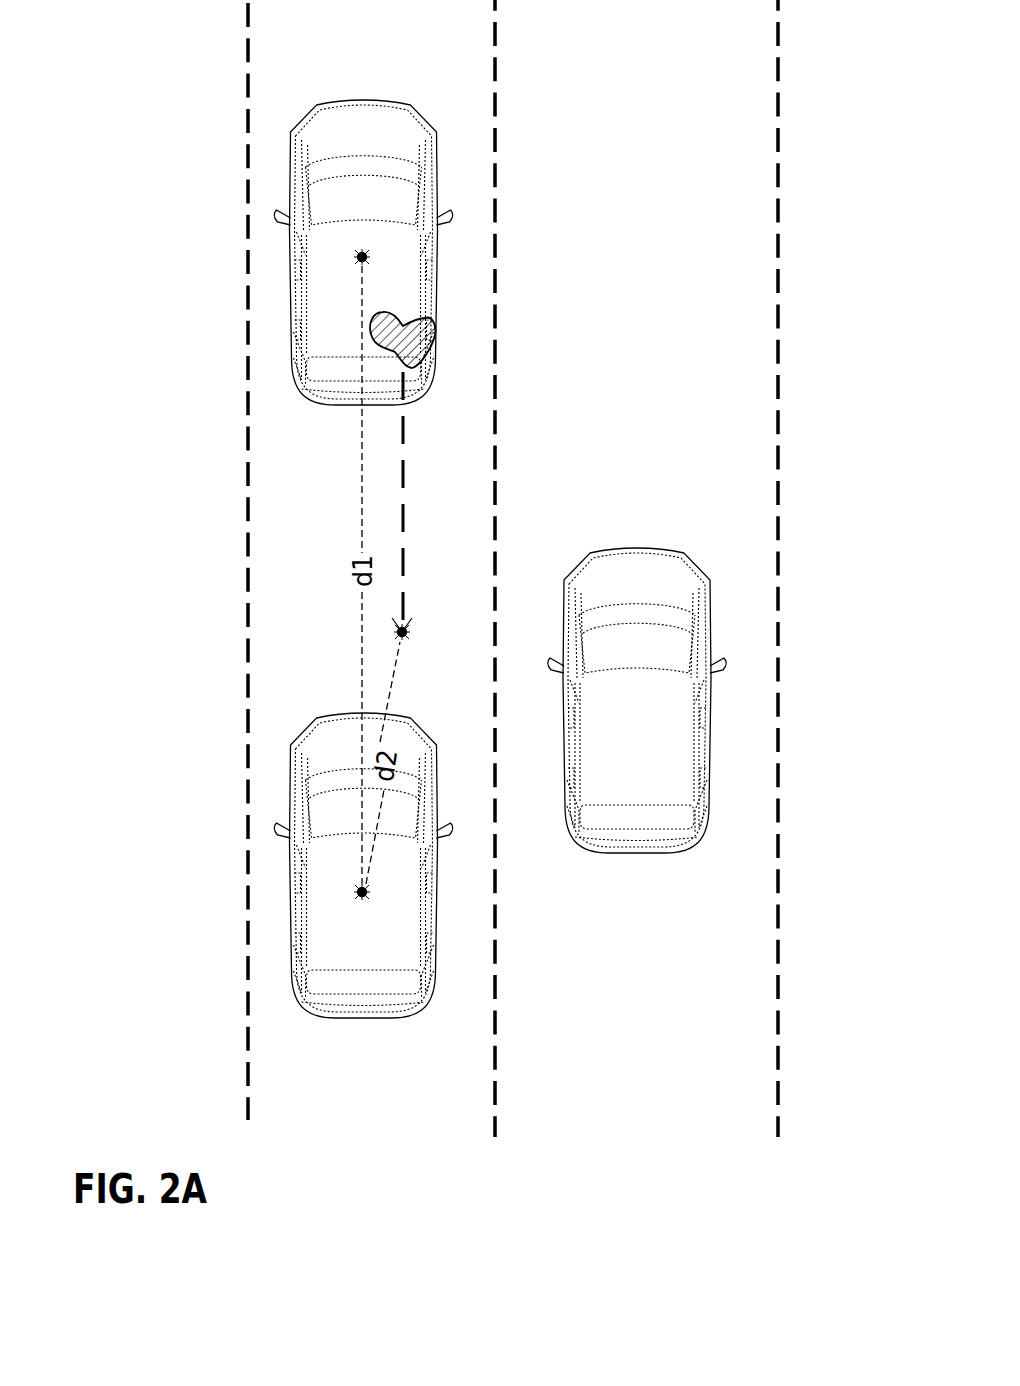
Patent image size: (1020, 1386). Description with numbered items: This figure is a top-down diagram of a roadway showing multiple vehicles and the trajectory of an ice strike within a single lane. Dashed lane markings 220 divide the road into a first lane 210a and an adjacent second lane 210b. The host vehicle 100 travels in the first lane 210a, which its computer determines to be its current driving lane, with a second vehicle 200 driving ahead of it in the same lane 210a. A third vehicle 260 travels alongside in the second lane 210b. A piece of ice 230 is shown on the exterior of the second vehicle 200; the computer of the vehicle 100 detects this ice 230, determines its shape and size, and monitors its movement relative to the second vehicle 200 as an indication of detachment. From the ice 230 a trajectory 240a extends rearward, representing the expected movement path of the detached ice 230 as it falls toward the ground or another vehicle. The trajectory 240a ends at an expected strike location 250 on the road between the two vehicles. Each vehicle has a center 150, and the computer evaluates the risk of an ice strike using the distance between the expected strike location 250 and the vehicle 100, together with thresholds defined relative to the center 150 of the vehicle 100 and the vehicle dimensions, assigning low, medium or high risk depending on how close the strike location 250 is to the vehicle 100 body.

The vehicle 100 is at (388, 962).
The second vehicle 200 is at (386, 156).
The third vehicle 260 is at (658, 766).
The center 150 is at (355, 255).
The ice 230 is at (368, 328).
The trajectory 240a is at (439, 497).
The expected strike location 250 is at (395, 635).
The lane markings 220 is at (777, 413).
The lane 210a is at (371, 559).
The lane 210b is at (636, 567).